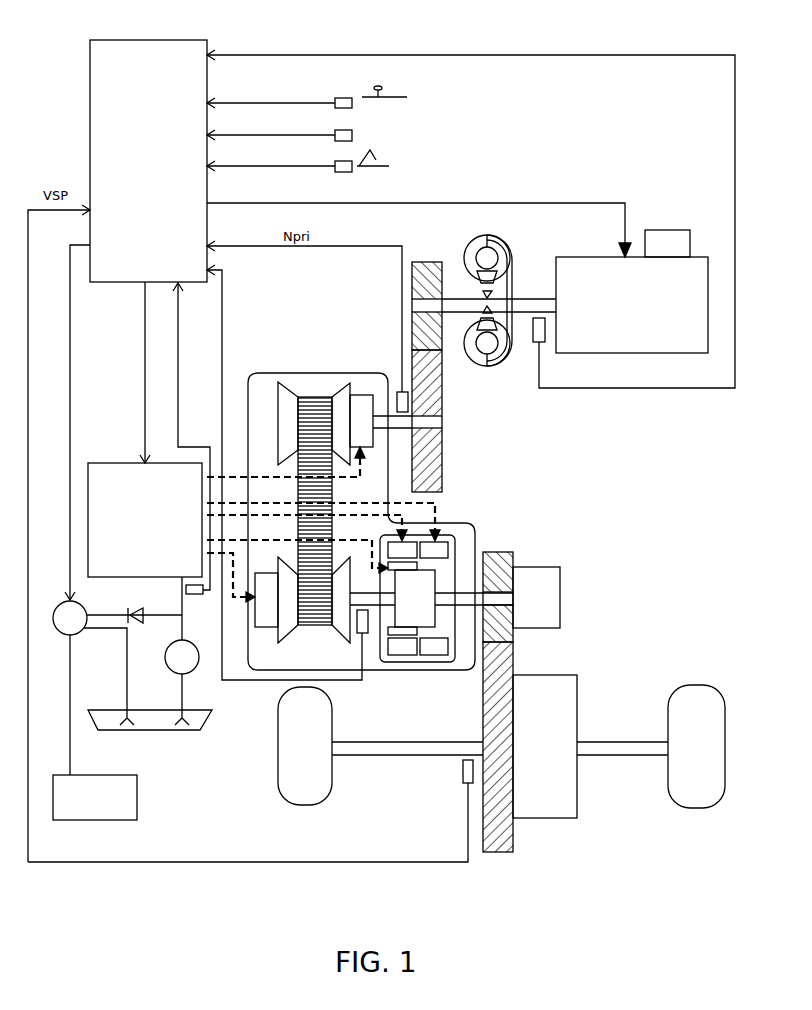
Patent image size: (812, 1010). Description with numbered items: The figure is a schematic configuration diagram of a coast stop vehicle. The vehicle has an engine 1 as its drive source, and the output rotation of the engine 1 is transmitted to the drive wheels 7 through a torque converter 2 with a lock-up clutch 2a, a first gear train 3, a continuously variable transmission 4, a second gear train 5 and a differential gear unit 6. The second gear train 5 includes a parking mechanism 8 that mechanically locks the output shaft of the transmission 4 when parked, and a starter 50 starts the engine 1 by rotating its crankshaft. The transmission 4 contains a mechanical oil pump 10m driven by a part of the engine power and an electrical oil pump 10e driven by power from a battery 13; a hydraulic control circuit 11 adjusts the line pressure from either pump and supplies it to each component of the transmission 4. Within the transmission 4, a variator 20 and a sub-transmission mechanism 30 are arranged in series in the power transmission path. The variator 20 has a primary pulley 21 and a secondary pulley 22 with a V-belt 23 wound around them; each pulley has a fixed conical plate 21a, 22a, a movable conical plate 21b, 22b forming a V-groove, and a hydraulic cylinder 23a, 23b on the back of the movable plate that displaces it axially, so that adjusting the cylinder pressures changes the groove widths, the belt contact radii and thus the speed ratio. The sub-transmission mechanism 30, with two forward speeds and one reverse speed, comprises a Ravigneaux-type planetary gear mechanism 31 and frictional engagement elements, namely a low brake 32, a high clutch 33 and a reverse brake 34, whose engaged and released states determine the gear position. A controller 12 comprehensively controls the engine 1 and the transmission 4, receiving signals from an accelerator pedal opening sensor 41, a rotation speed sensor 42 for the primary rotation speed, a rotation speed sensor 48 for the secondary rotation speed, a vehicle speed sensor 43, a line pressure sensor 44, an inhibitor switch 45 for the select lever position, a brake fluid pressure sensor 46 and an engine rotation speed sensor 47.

The engine 1 is at (694, 262).
The torque converter 2 is at (505, 266).
The lock-up clutch 2a is at (508, 288).
The first gear train 3 is at (420, 258).
The transmission 4 is at (380, 373).
The second gear train 5 is at (500, 866).
The differential gear unit 6 is at (545, 808).
The drive wheels 7 is at (308, 808).
The parking mechanism 8 is at (545, 590).
The electrical oil pump 10e is at (76, 630).
The mechanical oil pump 10m is at (175, 672).
The hydraulic control circuit 11 is at (105, 468).
The controller 12 is at (195, 47).
The battery 13 is at (122, 810).
The variator 20 is at (323, 386).
The primary pulley 21 is at (330, 386).
The fixed conical plate 21a is at (283, 392).
The movable conical plate 21b is at (340, 395).
The secondary pulley 22 is at (318, 644).
The fixed conical plate 22a is at (340, 625).
The movable conical plate 22b is at (288, 625).
The V-belt 23 is at (315, 397).
The hydraulic cylinder 23a is at (357, 420).
The hydraulic cylinder 23b is at (271, 626).
The sub-transmission mechanism 30 is at (462, 577).
The Ravigneaux-type planetary gear mechanism 31 is at (418, 593).
The low brake 32 is at (405, 552).
The high clutch 33 is at (405, 632).
The reverse brake 34 is at (435, 550).
The accelerator pedal opening sensor 41 is at (343, 172).
The rotation speed sensor 42 is at (398, 392).
The vehicle speed sensor 43 is at (462, 777).
The line pressure sensor 44 is at (195, 595).
The inhibitor switch 45 is at (343, 99).
The brake fluid pressure sensor 46 is at (335, 138).
The engine rotation speed sensor 47 is at (535, 345).
The rotation speed sensor 48 is at (363, 628).
The starter 50 is at (658, 232).